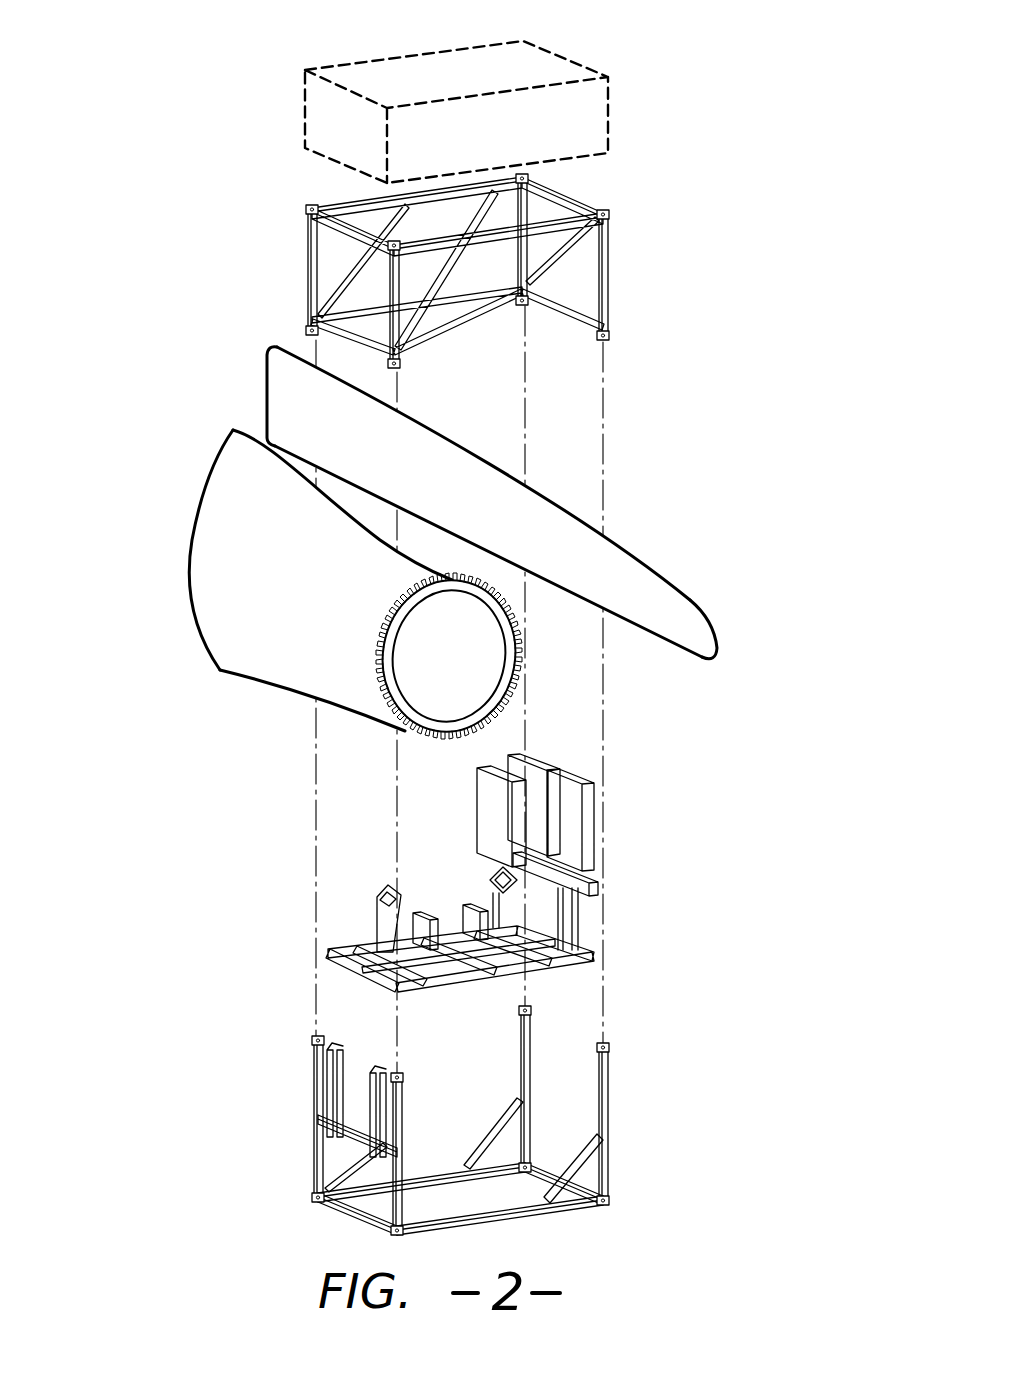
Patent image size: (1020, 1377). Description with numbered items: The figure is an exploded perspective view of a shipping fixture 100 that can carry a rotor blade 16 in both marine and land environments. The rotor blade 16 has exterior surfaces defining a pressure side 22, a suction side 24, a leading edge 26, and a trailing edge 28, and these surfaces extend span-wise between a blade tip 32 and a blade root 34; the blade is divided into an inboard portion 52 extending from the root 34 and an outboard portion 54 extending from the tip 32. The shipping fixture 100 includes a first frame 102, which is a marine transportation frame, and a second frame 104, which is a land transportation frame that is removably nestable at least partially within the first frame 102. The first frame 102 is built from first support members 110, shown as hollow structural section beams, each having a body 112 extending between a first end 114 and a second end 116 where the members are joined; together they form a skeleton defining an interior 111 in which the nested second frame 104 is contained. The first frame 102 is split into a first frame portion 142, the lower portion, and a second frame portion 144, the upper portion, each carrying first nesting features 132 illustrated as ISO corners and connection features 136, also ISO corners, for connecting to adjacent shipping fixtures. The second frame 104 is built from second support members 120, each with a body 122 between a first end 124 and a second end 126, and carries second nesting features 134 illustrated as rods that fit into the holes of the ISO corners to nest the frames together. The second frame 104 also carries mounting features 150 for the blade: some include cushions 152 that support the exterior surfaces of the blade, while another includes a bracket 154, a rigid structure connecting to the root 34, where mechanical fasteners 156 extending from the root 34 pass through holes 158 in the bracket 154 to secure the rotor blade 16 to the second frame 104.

The shipping fixture 100 is at (300, 86).
The second frame portion 144 is at (292, 230).
The first frame 102 is at (454, 1138).
The second frame 104 is at (464, 904).
The first support member 110 is at (413, 298).
The connection feature 136 is at (613, 203).
The rotor blade 16 is at (455, 542).
The pressure side 22 is at (500, 519).
The inboard portion 52 is at (398, 655).
The trailing edge 28 is at (234, 426).
The suction side 24 is at (207, 577).
The leading edge 26 is at (222, 670).
The blade tip 32 is at (730, 640).
The blade root 34 is at (462, 655).
The mechanical fasteners 156 is at (490, 700).
The outboard portion 54 is at (522, 512).
The mounting feature 150 is at (509, 876).
The cushion 152 is at (485, 810).
The bracket 154 is at (388, 888).
The holes 158 is at (428, 912).
The second nesting feature 134 is at (318, 957).
The second end 126 is at (578, 967).
The body 122 is at (547, 968).
The first end 124 is at (420, 985).
The second support member 120 is at (357, 988).
The interior 111 is at (480, 1098).
The body 112 is at (493, 1217).
The first end 114 is at (427, 1213).
The second end 116 is at (592, 1210).
The first nesting feature 132 is at (362, 1200).
The first frame portion 142 is at (305, 1135).